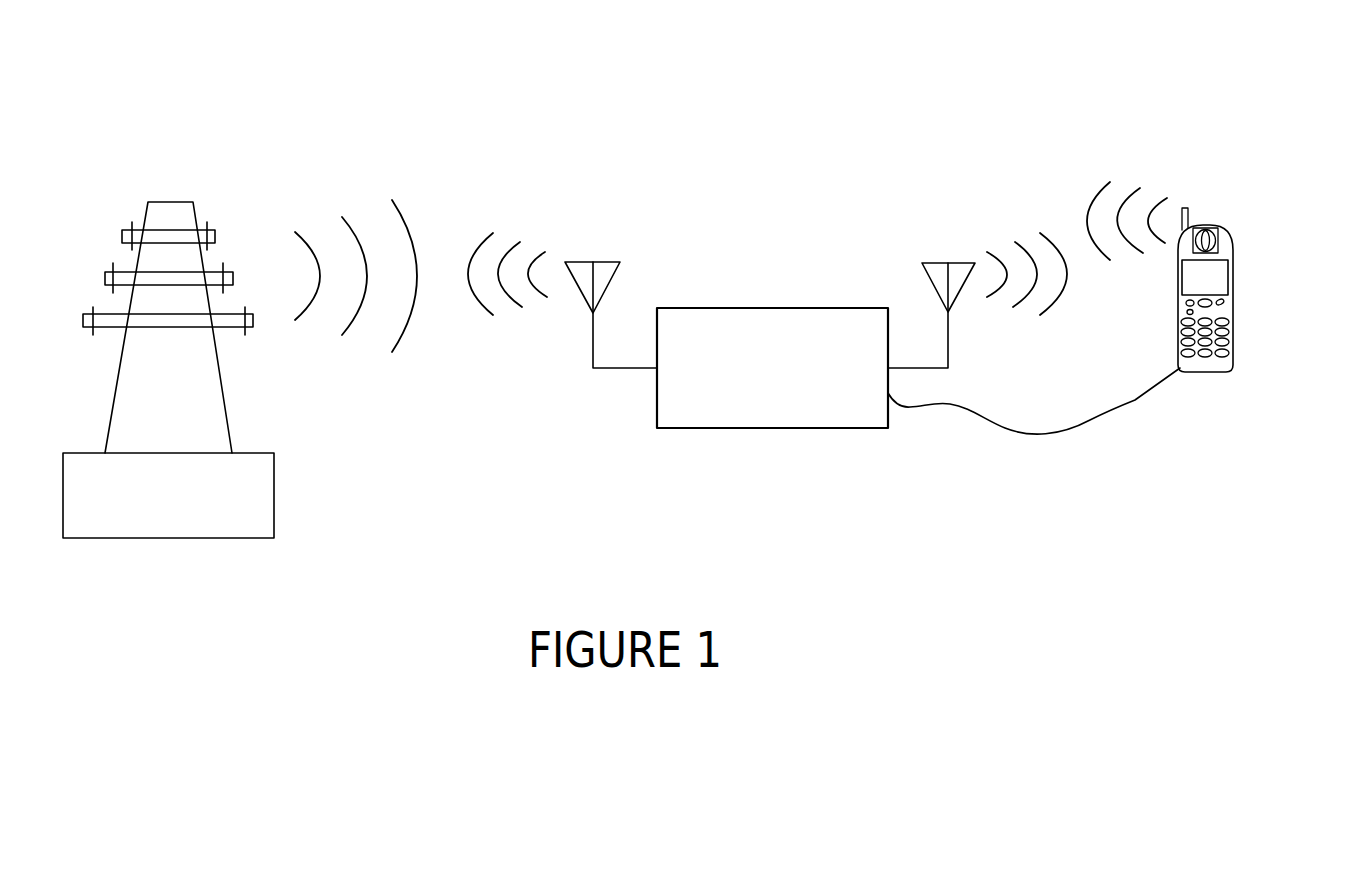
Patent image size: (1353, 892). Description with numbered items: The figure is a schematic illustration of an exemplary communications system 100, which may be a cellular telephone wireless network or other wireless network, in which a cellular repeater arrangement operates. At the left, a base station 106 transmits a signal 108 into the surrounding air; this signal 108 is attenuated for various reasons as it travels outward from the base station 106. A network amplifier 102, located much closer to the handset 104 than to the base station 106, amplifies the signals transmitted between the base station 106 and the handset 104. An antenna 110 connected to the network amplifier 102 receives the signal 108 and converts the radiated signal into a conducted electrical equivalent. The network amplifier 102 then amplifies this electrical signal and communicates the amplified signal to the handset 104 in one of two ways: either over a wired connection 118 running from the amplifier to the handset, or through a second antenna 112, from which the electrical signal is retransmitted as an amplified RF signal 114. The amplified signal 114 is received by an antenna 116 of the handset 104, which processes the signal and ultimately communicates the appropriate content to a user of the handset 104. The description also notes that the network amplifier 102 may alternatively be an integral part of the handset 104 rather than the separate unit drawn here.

The communications system 100 is at (775, 188).
The network amplifier 102 is at (791, 308).
The handset 104 is at (1233, 250).
The base station 106 is at (170, 201).
The signal 108 is at (400, 205).
The antenna 110 is at (597, 262).
The second antenna 112 is at (930, 262).
The amplified RF signal 114 is at (1015, 243).
The antenna of handset 116 is at (1187, 208).
The wired connection 118 is at (1125, 410).